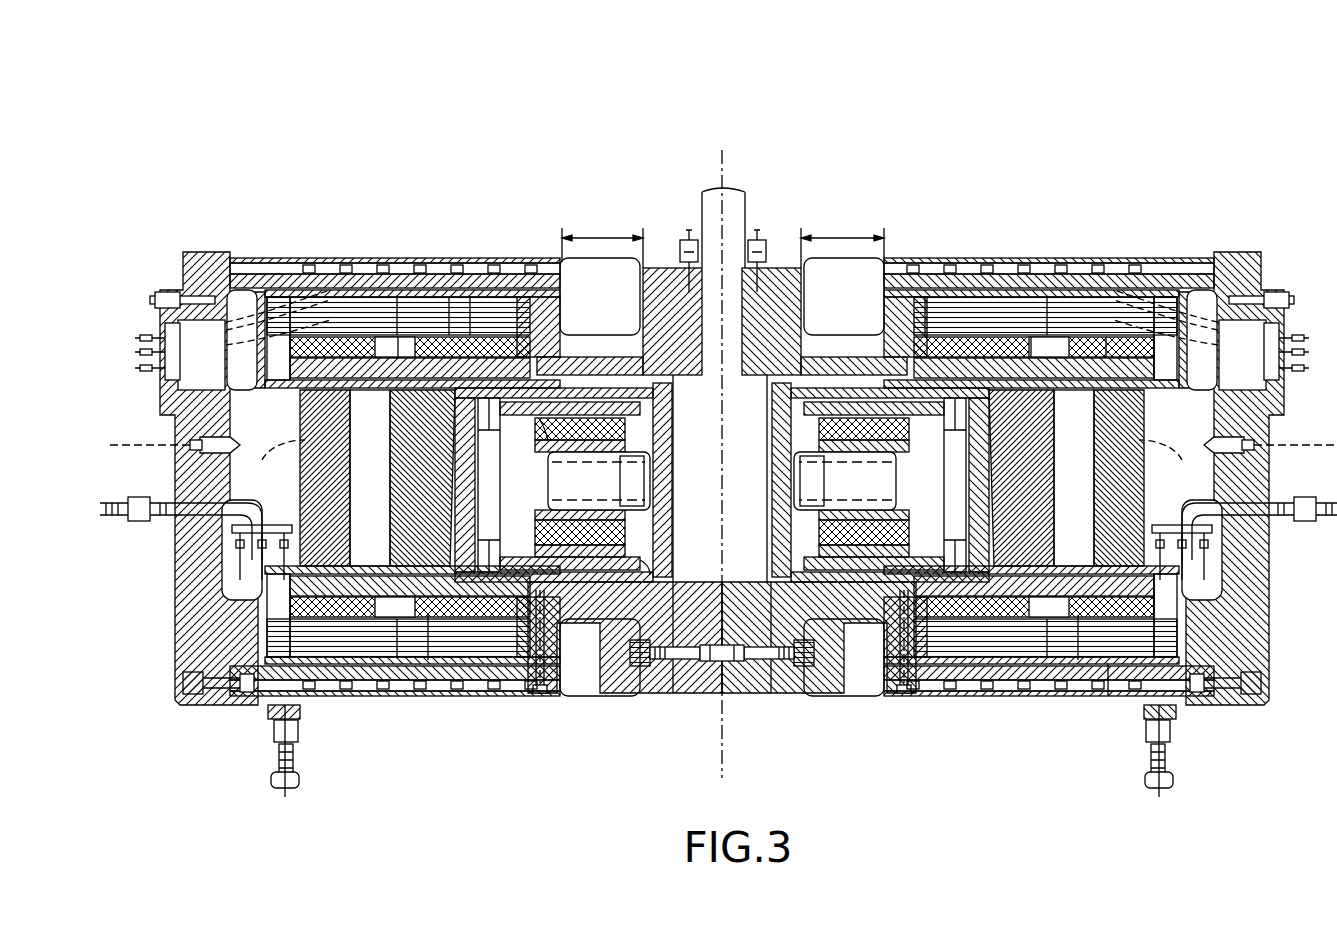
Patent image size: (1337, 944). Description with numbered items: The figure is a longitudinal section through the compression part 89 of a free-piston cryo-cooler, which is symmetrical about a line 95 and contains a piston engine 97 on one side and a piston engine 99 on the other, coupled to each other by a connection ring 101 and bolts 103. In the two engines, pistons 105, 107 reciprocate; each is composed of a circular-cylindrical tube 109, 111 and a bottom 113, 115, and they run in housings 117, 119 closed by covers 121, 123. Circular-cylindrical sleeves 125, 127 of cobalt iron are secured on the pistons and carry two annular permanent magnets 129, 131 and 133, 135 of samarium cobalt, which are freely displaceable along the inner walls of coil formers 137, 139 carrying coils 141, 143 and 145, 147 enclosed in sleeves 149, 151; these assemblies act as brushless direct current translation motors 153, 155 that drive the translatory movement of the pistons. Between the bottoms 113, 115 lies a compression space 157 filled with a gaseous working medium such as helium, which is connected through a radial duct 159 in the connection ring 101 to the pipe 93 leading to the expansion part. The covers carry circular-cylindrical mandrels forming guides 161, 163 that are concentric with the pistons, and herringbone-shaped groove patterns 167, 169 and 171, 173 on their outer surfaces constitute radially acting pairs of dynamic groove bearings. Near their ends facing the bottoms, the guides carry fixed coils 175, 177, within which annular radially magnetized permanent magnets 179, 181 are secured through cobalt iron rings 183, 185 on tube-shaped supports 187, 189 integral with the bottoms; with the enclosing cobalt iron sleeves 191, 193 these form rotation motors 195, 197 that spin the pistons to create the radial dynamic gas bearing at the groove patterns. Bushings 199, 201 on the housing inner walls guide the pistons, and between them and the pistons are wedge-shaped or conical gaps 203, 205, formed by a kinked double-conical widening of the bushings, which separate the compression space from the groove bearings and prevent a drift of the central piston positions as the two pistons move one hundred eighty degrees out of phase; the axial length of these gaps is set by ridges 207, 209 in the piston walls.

The compression part 89 is at (567, 183).
The pipe 93 is at (702, 198).
The line 95 is at (730, 772).
The piston engine 97 is at (464, 730).
The piston engine 99 is at (1040, 730).
The connection ring 101 is at (758, 322).
The bolts 103 is at (662, 668).
The piston 105 is at (565, 332).
The piston 107 is at (885, 332).
The circular-cylindrical tube 109 is at (496, 560).
The circular-cylindrical tube 111 is at (937, 690).
The bottom 113 is at (665, 412).
The bottom 115 is at (800, 560).
The housing 117 is at (322, 267).
The housing 119 is at (1125, 267).
The cover 121 is at (190, 614).
The cover 123 is at (1250, 614).
The circular-cylindrical sleeve 125 is at (404, 337).
The circular-cylindrical sleeve 127 is at (1031, 337).
The annular permanent magnet 129 is at (341, 300).
The annular permanent magnet 131 is at (449, 297).
The annular permanent magnet 133 is at (960, 310).
The annular permanent magnet 135 is at (1106, 337).
The coil former 137 is at (385, 690).
The coil former 139 is at (1108, 695).
The coil 141 is at (317, 697).
The coil 143 is at (428, 660).
The coil 145 is at (977, 655).
The coil 147 is at (1170, 598).
The sleeve 149 is at (348, 655).
The sleeve 151 is at (1078, 660).
The translation motor 153 is at (387, 600).
The translation motor 155 is at (1057, 600).
The compression space 157 is at (716, 662).
The radial duct 159 is at (737, 282).
The guide 161 is at (484, 552).
The guide 163 is at (960, 552).
The herringbone-shaped groove pattern 167 is at (305, 497).
The herringbone-shaped groove pattern 169 is at (476, 297).
The herringbone-shaped groove pattern 171 is at (1140, 497).
The herringbone-shaped groove pattern 173 is at (925, 297).
The coil 175 is at (600, 432).
The coil 177 is at (810, 540).
The annular radially magnetized permanent magnet 179 is at (640, 490).
The annular radially magnetized permanent magnet 181 is at (905, 452).
The cobalt iron ring 183 is at (540, 452).
The cobalt iron ring 185 is at (900, 495).
The tube-shaped support 187 is at (620, 462).
The tube-shaped support 189 is at (800, 498).
The cobalt iron sleeve 191 is at (540, 420).
The cobalt iron sleeve 193 is at (905, 420).
The rotation motor 195 is at (606, 582).
The rotation motor 197 is at (875, 582).
The bushing 199 is at (640, 560).
The bushing 201 is at (800, 654).
The gap 203 is at (614, 357).
The gap 205 is at (832, 357).
The ridge 207 is at (575, 572).
The ridge 209 is at (885, 680).